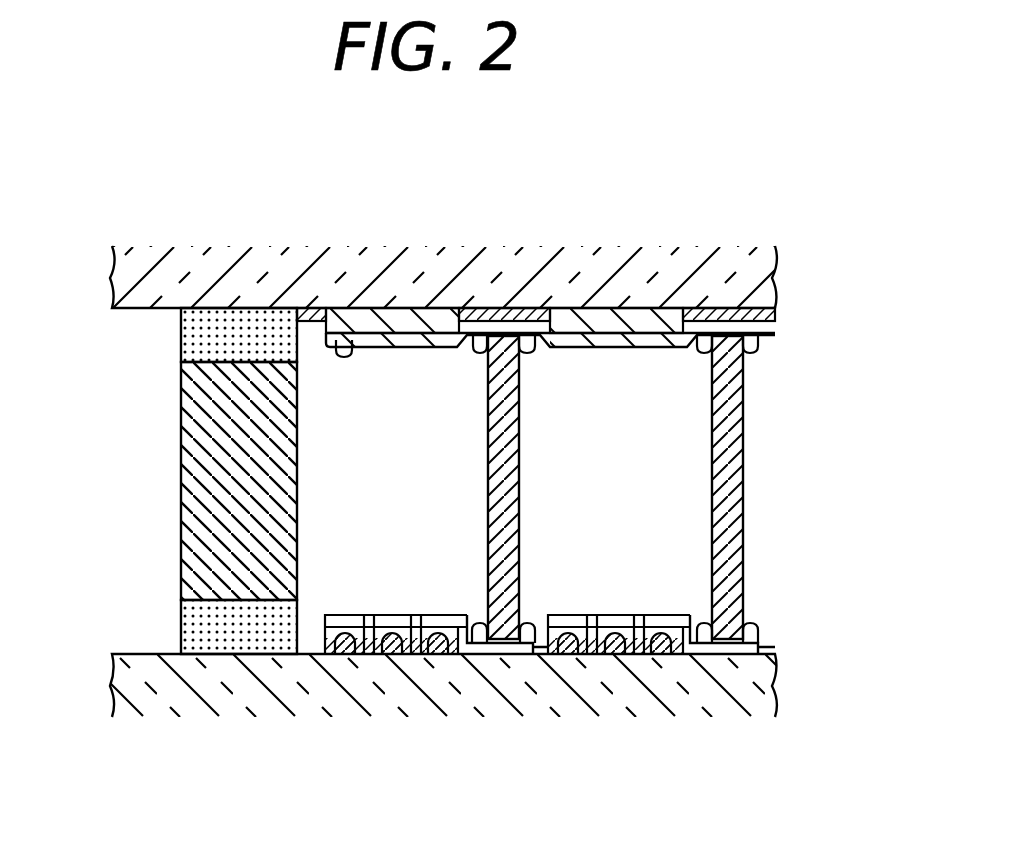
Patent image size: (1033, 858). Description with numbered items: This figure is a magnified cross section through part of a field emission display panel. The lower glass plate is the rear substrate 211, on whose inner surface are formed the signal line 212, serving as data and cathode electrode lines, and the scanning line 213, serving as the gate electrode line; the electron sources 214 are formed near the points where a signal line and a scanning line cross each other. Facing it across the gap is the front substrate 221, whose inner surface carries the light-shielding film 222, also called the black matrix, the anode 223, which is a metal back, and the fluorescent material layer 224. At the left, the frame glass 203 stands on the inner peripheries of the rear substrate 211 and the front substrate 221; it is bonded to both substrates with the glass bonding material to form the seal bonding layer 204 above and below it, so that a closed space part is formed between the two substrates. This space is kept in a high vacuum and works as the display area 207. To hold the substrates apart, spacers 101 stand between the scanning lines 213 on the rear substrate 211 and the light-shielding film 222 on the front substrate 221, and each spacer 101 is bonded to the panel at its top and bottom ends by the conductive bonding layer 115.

The spacer 101 is at (745, 500).
The conductive bonding layer 115 is at (752, 347).
The frame glass 203 is at (205, 415).
The seal bonding layer 204 is at (192, 340).
The display area 207 is at (363, 505).
The rear substrate 211 is at (760, 691).
The signal line 212 is at (612, 655).
The scanning line 213 is at (693, 655).
The electron sources 214 is at (556, 655).
The front substrate 221 is at (688, 258).
The light-shielding film (black matrix) 222 is at (521, 315).
The anode 223 is at (348, 352).
The fluorescent material layer 224 is at (429, 316).